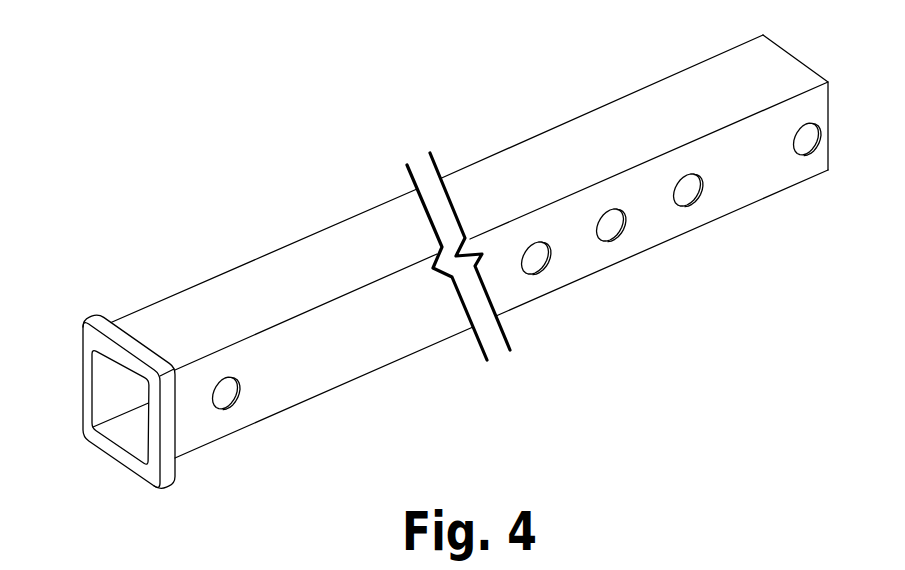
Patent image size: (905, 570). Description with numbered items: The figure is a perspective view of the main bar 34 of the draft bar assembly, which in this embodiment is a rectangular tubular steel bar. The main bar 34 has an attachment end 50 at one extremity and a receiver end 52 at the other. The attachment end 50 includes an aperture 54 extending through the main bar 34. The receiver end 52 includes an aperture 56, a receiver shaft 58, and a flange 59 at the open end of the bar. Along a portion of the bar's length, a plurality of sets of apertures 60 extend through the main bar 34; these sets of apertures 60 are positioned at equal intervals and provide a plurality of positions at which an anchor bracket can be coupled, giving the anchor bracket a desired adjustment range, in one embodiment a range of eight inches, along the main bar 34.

The attachment end 50 is at (778, 72).
The main bar 34 is at (300, 272).
The receiver end 52 is at (160, 333).
The aperture 54 is at (810, 142).
The aperture 56 is at (227, 390).
The receiver shaft 58 is at (127, 435).
The flange 59 is at (83, 337).
The sets of apertures 60 is at (547, 263).